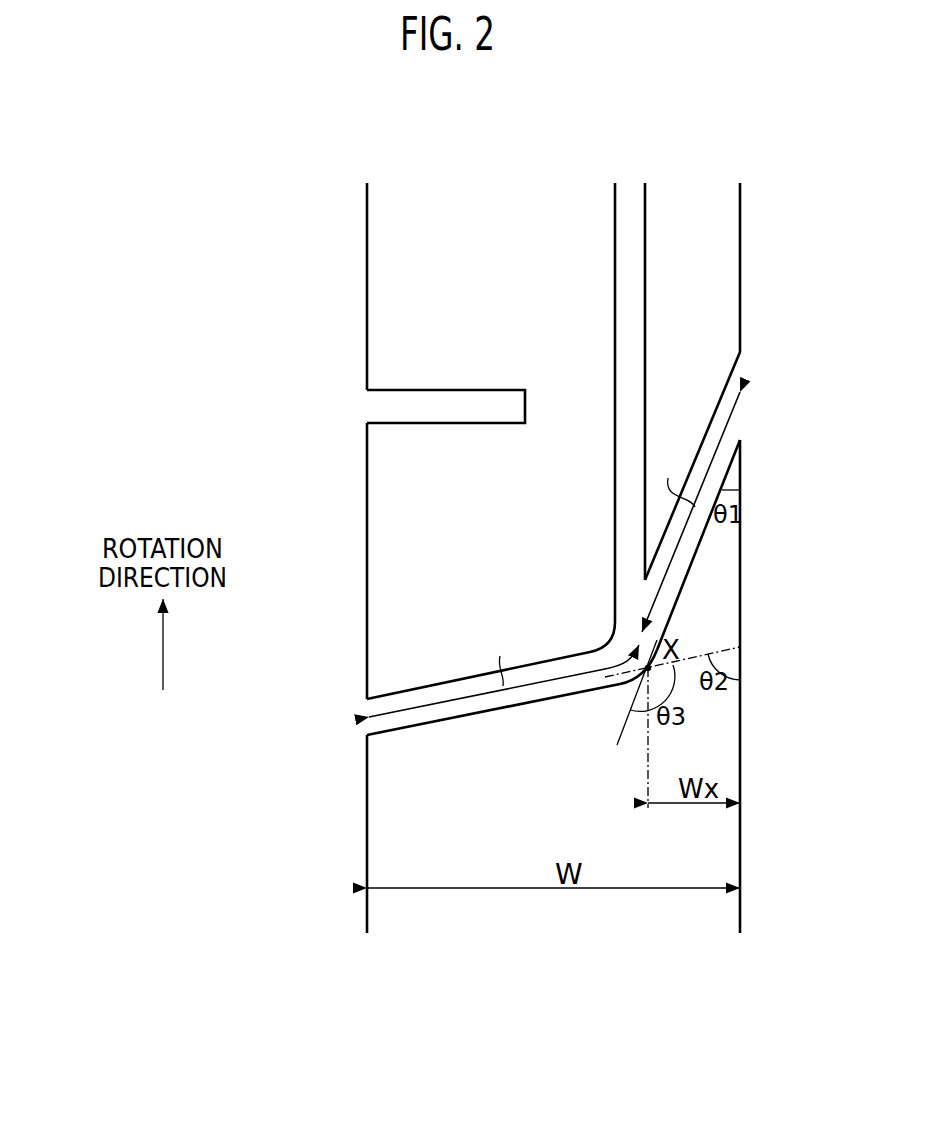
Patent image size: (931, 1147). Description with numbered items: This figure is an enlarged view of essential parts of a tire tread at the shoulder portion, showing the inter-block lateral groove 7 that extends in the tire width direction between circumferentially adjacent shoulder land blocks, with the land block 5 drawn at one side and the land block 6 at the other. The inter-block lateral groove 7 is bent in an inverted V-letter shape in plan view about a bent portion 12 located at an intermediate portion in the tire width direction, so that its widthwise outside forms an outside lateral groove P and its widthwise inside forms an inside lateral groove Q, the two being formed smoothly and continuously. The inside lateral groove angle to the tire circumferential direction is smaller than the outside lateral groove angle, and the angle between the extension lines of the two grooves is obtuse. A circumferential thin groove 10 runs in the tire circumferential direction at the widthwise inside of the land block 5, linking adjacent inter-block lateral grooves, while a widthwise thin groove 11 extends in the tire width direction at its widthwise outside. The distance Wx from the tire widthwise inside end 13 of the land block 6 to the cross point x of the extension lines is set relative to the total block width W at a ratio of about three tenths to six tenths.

The land block 5 is at (358, 493).
The land block 6 is at (358, 822).
The inter-block lateral groove 7 is at (566, 681).
The circumferential thin groove 10 is at (632, 256).
The widthwise thin groove 11 is at (458, 408).
The bent portion 12 is at (633, 622).
The tire widthwise inside end 13 is at (742, 604).